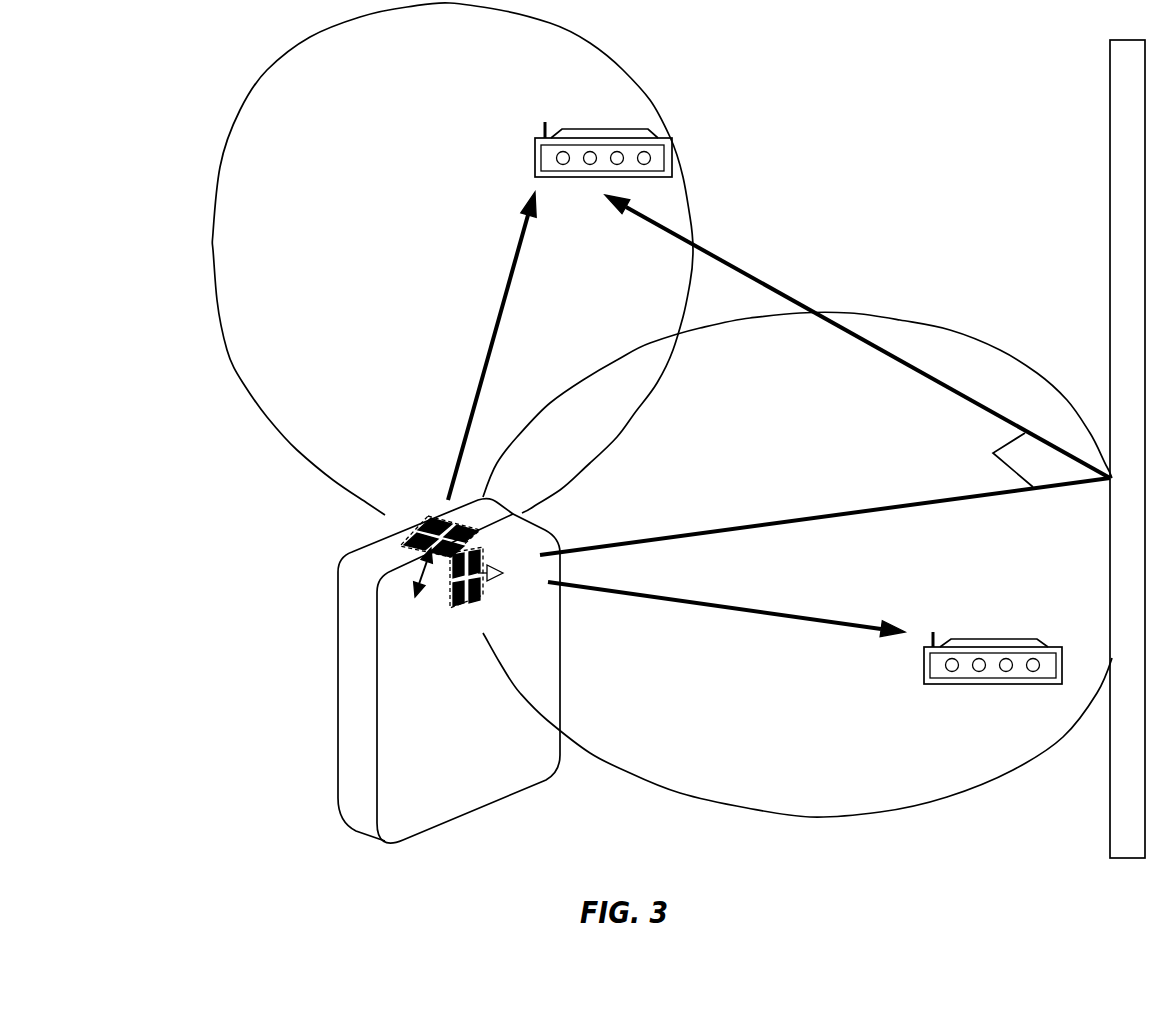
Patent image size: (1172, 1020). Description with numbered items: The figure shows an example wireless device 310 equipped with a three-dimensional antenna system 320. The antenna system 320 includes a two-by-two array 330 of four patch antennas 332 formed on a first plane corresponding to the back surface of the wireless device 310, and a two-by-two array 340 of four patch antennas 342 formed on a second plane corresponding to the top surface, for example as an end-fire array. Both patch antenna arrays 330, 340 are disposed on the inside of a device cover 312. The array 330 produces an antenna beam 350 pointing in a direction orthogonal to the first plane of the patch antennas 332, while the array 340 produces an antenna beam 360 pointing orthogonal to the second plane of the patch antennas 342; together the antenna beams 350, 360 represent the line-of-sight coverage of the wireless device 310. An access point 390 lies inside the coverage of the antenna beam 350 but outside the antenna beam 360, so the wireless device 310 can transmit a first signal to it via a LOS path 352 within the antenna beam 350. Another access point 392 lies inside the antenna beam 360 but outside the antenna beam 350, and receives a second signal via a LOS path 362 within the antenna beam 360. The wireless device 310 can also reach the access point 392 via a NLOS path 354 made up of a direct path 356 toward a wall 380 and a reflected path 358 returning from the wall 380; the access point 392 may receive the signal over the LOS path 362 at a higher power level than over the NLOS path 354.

The wireless device 310 is at (338, 670).
The device cover 312 is at (440, 787).
The 3-D antenna system 320 is at (424, 587).
The 2×2 array 330 is at (475, 592).
The patch antennas 332 is at (515, 573).
The 2×2 array 340 is at (428, 522).
The patch antennas 342 is at (420, 542).
The antenna beam 350 is at (951, 333).
The LOS path 352 is at (767, 611).
The NLOS path 354 is at (958, 463).
The direct path 356 is at (763, 524).
The reflected path 358 is at (768, 283).
The antenna beam 360 is at (213, 246).
The LOS path 362 is at (493, 345).
The wall 380 is at (1108, 246).
The access point 390 is at (982, 638).
The access point 392 is at (597, 129).